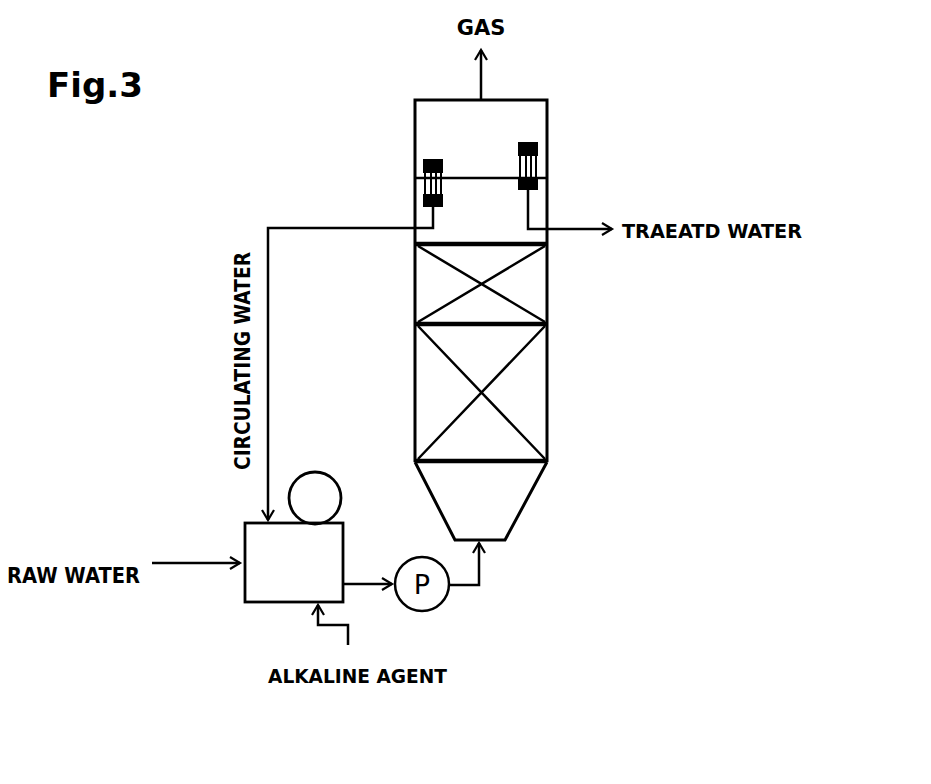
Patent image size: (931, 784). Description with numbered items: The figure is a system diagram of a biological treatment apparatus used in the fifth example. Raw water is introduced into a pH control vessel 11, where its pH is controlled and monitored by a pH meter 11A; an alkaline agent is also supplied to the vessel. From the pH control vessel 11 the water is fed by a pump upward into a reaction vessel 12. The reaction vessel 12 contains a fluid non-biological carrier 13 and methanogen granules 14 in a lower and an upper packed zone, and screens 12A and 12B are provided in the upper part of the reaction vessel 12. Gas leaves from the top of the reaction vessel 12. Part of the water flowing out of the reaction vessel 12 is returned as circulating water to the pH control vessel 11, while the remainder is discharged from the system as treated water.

The pH control vessel 11 is at (267, 602).
The pH meter 11A is at (313, 472).
The reaction vessel 12 is at (478, 320).
The screen 12A is at (538, 145).
The screen 12B is at (423, 167).
The fluid non-biological carrier 13 is at (522, 367).
The methanogen granules 14 is at (515, 286).